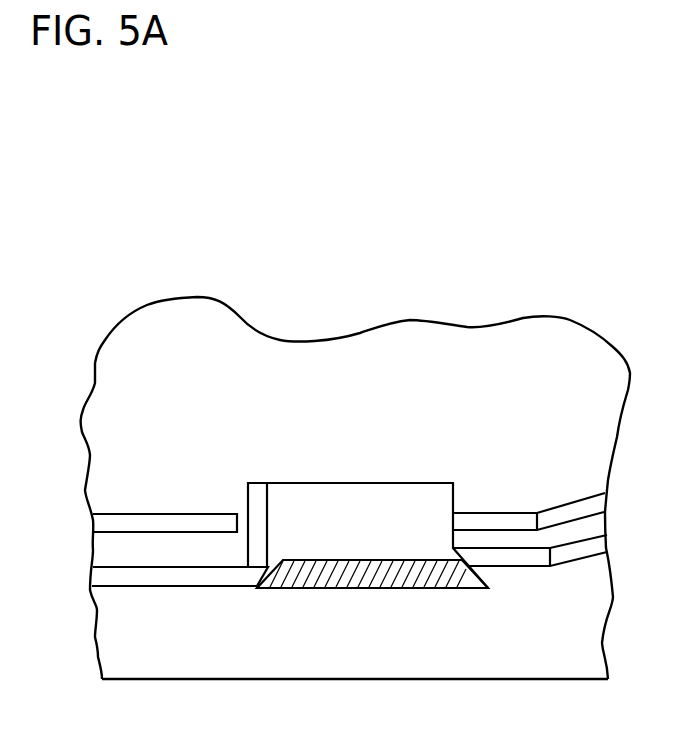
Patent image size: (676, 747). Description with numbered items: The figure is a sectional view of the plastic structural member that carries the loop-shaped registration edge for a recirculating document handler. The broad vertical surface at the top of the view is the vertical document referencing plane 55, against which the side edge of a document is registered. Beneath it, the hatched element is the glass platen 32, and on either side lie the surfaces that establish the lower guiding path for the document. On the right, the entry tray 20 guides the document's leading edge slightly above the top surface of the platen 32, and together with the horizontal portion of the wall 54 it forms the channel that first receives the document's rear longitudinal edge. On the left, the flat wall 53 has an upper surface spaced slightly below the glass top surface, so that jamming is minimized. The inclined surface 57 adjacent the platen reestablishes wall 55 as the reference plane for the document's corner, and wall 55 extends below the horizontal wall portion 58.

The vertical document referencing plane 55 is at (419, 423).
The horizontal wall portion 58 is at (155, 521).
The flat wall 53 is at (182, 577).
The inclined surface 57 is at (262, 497).
The platen 32 is at (362, 580).
The horizontal portion of a wall 54 is at (490, 522).
The entry tray 20 is at (520, 558).